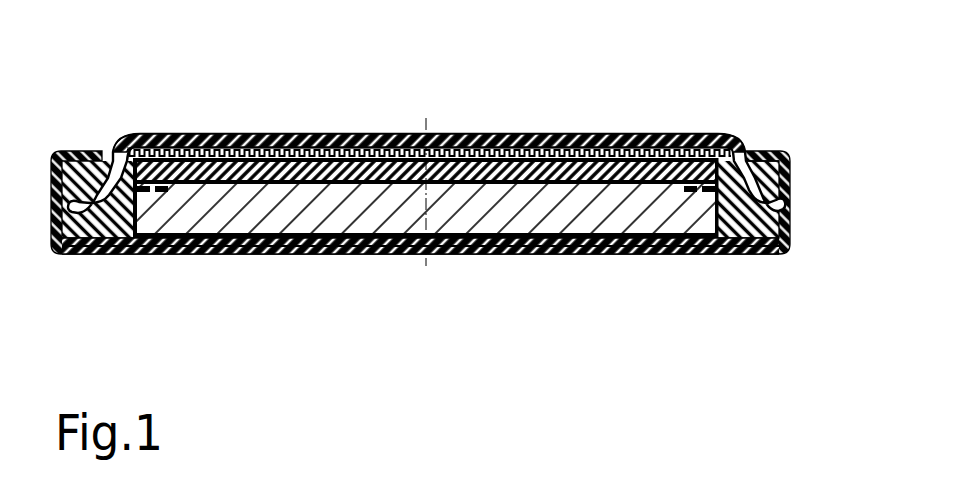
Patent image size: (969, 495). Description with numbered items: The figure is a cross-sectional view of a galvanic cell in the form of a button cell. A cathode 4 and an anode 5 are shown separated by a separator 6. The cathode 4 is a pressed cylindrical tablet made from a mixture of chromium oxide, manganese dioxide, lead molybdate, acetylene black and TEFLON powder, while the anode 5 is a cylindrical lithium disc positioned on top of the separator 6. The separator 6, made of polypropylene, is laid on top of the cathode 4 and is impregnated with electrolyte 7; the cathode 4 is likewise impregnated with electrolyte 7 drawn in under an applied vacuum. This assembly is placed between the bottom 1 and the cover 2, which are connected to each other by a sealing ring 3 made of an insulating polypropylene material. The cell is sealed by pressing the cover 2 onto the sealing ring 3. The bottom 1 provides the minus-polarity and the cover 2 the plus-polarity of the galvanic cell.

The bottom 1 is at (690, 255).
The cover 2 is at (700, 145).
The sealing ring 3 is at (793, 226).
The cathode 4 is at (610, 240).
The anode 5 is at (605, 148).
The separator 6 is at (791, 157).
The electrolyte 7 is at (484, 138).